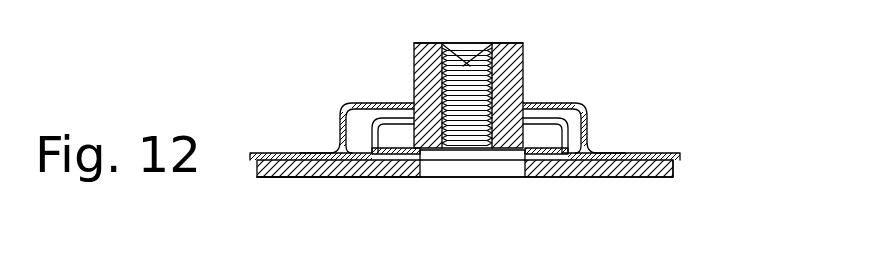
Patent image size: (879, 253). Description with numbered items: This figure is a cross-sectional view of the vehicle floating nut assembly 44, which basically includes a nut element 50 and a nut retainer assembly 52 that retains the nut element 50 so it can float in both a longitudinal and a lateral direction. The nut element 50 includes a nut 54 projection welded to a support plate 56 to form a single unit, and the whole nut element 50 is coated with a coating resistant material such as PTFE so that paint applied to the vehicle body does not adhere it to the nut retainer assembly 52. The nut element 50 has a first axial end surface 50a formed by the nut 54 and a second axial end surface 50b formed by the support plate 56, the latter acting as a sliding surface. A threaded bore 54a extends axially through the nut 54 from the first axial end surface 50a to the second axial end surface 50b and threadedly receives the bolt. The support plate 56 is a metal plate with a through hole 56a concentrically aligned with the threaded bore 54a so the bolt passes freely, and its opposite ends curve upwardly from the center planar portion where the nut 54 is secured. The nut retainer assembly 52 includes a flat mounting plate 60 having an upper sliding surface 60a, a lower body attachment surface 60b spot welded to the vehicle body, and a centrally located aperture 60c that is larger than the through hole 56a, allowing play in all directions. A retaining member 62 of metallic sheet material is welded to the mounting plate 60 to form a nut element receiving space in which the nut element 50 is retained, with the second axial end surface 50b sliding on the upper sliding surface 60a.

The vehicle floating nut assembly 44 is at (676, 76).
The nut element 50 is at (252, 52).
The first axial end surface 50a is at (419, 43).
The second axial end surface 50b is at (520, 178).
The nut retainer assembly 52 is at (758, 100).
The nut 54 is at (413, 82).
The threaded bore 54a is at (478, 48).
The support plate 56 is at (345, 148).
The through hole 56a is at (430, 157).
The mounting plate 60 is at (675, 175).
The upper sliding surface 60a is at (567, 130).
The lower body attachment surface 60b is at (633, 177).
The centrally located aperture 60c is at (415, 178).
The retaining member 62 is at (633, 153).